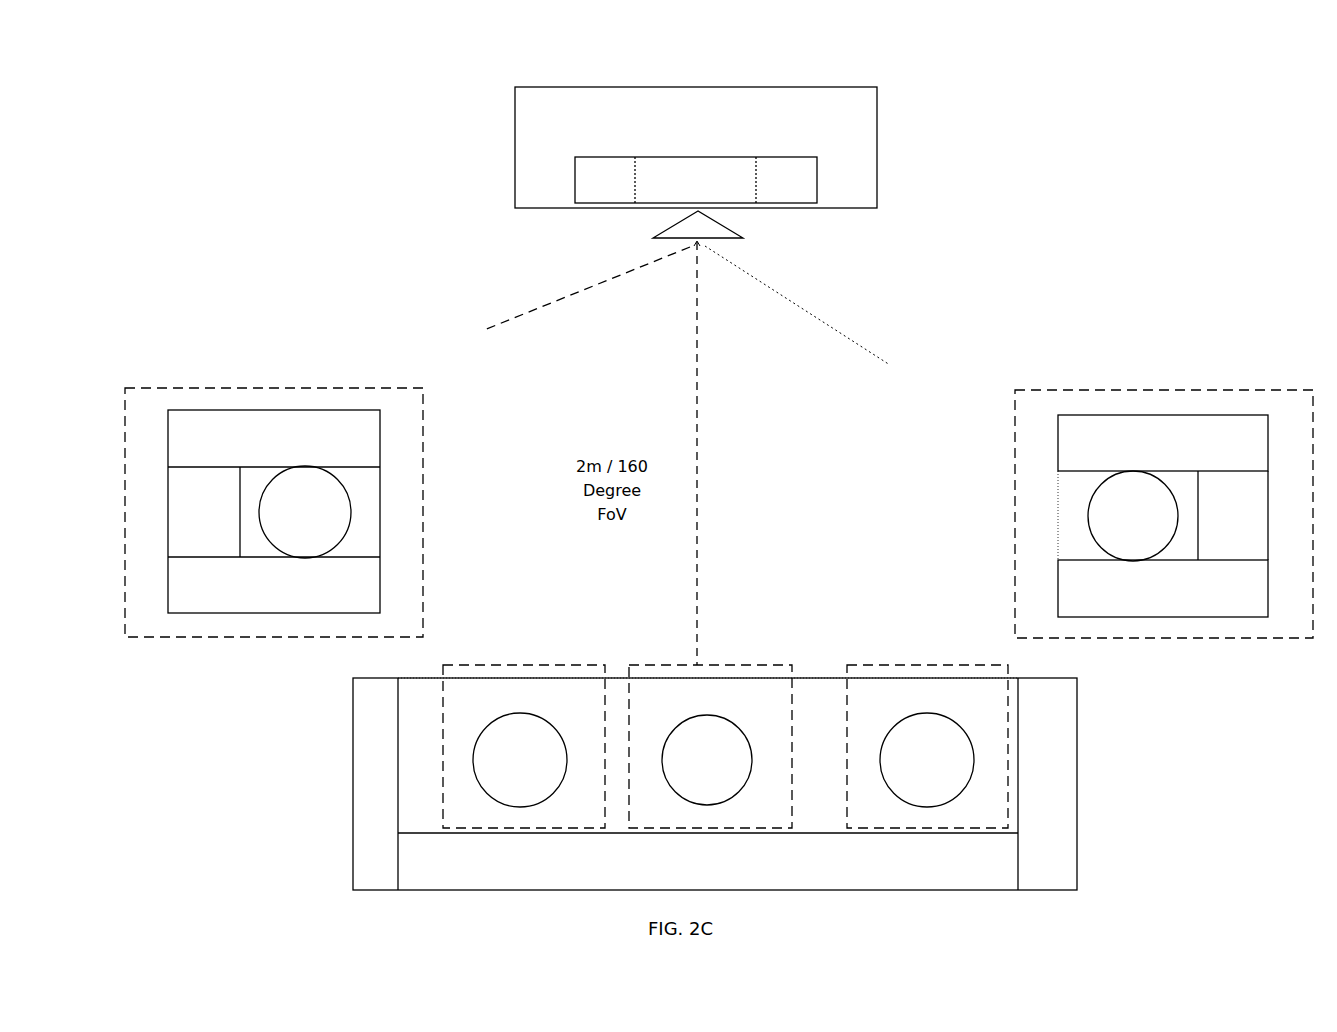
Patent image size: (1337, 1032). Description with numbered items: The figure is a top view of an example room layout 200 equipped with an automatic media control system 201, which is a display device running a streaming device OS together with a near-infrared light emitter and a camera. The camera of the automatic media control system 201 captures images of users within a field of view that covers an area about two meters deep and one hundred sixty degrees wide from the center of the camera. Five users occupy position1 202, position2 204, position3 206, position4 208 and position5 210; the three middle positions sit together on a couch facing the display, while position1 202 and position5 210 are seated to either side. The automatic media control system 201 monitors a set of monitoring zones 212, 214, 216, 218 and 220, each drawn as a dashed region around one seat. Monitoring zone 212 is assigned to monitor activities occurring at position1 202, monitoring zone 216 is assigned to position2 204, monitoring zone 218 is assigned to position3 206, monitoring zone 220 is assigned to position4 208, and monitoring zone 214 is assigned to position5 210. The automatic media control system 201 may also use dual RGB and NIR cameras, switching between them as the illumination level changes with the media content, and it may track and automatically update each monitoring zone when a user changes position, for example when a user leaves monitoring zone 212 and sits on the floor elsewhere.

The room layout 200 is at (242, 68).
The automatic media control system 201 is at (785, 82).
The position1 202 is at (351, 515).
The position2 204 is at (520, 713).
The position3 206 is at (705, 713).
The position4 208 is at (927, 713).
The position5 210 is at (1088, 517).
The monitoring zone 212 is at (309, 464).
The monitoring zone 214 is at (1147, 461).
The monitoring zone 216 is at (538, 703).
The monitoring zone 218 is at (711, 699).
The monitoring zone 220 is at (927, 695).